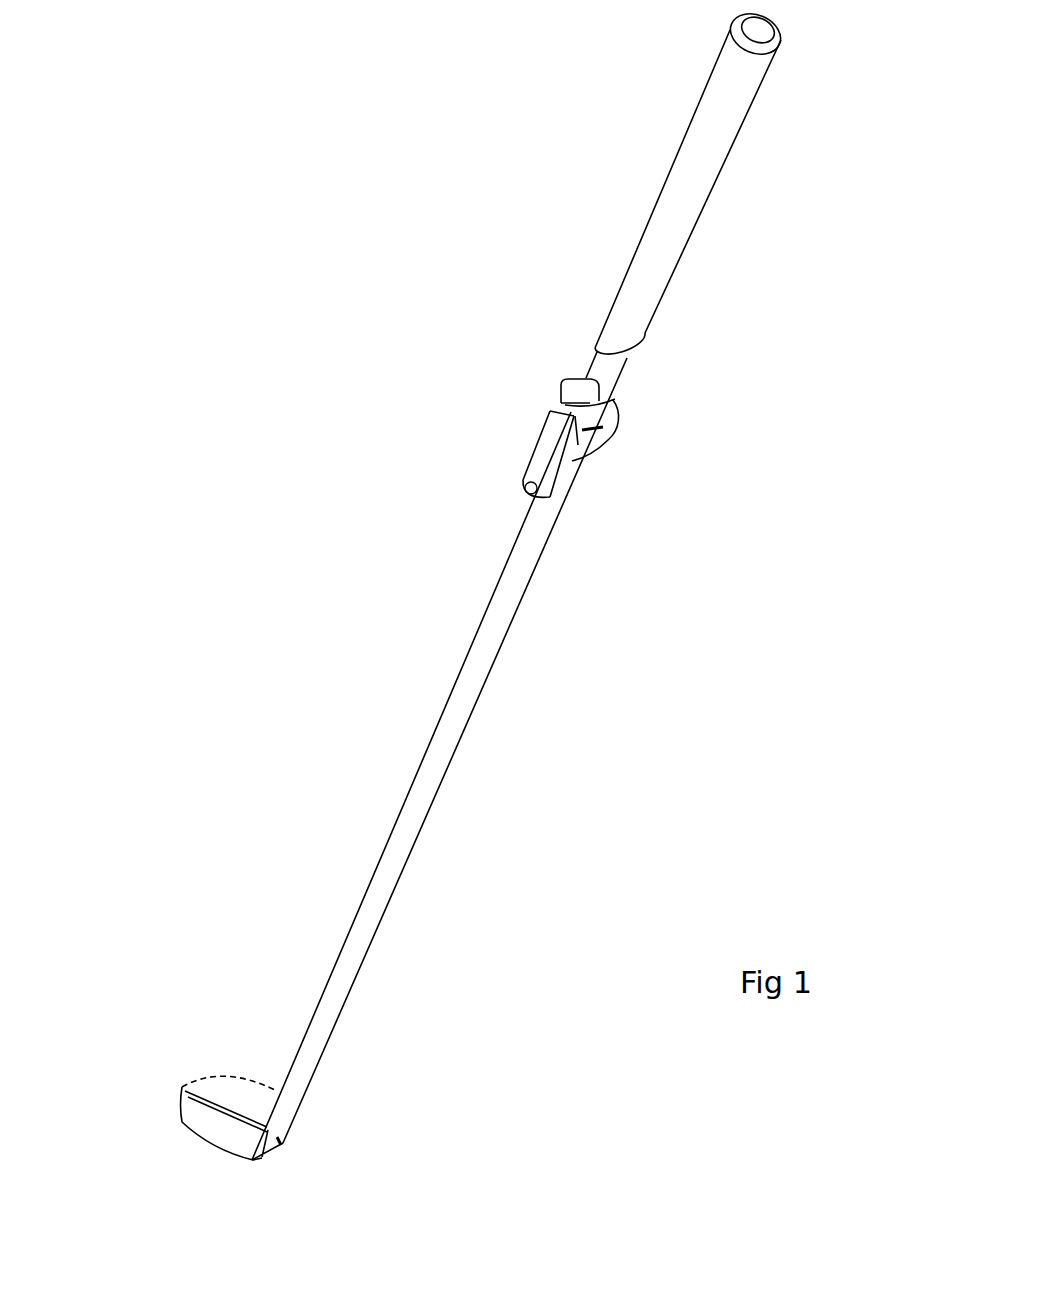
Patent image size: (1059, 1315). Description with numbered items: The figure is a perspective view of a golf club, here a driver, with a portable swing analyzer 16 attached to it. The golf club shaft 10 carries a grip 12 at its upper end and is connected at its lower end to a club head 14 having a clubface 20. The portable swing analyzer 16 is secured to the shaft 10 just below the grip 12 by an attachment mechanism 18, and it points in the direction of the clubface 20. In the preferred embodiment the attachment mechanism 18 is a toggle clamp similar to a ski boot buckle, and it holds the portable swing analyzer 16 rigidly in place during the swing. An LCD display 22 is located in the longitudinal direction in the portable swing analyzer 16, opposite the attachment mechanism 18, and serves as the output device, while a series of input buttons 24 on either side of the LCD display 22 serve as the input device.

The golf club shaft 10 is at (478, 677).
The grip 12 is at (713, 147).
The club head 14 is at (252, 1095).
The portable swing analyzer 16 is at (560, 393).
The attachment mechanism 18 is at (610, 433).
The clubface 20 is at (198, 1108).
The LCD display 22 is at (540, 447).
The input buttons 24 is at (616, 403).